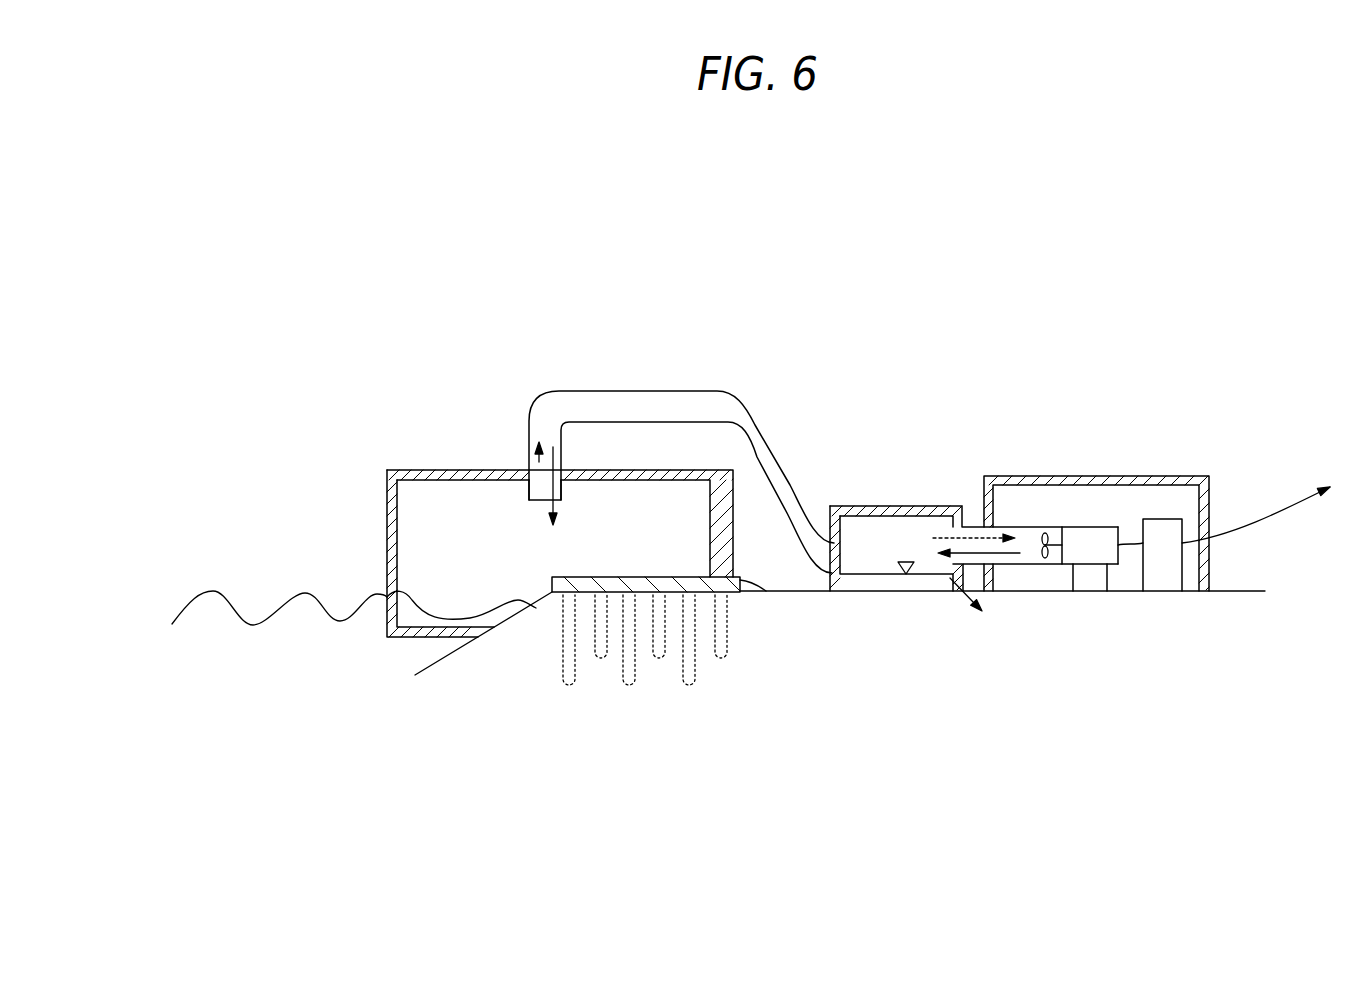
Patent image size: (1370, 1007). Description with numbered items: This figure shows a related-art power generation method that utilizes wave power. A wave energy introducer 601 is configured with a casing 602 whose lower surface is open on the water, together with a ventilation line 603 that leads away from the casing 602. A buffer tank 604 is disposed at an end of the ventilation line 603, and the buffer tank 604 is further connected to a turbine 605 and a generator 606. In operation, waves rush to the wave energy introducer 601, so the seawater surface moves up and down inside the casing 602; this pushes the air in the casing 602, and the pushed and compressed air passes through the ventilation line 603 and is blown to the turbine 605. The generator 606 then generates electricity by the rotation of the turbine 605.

The wave energy introducer 601 is at (452, 470).
The casing 602 is at (387, 521).
The ventilation line 603 is at (590, 392).
The buffer tank 604 is at (885, 506).
The turbine 605 is at (1047, 534).
The generator 606 is at (1103, 527).